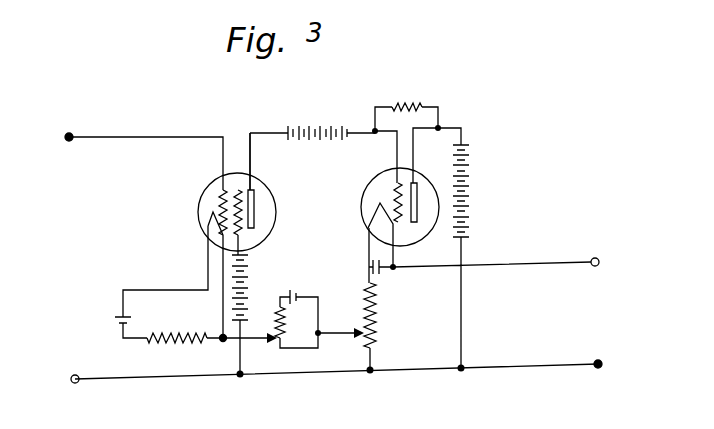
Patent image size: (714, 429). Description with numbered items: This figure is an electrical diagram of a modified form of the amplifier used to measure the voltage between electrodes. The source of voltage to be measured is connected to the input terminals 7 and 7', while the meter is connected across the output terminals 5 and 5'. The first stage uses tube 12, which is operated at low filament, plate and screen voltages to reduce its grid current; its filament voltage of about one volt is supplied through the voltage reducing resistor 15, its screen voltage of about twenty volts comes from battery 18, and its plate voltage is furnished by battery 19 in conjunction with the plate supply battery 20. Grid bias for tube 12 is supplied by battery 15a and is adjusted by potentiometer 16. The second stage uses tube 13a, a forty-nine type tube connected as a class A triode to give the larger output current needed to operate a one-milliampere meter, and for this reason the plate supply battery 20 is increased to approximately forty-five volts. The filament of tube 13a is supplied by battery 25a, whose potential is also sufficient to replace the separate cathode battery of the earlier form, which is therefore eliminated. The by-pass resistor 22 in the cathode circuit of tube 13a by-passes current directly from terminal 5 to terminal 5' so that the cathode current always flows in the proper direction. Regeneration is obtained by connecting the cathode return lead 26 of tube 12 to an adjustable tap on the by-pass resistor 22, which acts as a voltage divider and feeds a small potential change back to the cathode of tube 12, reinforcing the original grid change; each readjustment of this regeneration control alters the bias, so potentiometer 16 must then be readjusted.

The input terminal 7 is at (61, 127).
The input terminal 7' is at (64, 367).
The output terminal 5 is at (610, 253).
The output terminal 5' is at (614, 357).
The tube 12 is at (276, 214).
The tube 13a is at (363, 206).
The voltage reducing resistor 15 is at (180, 331).
The battery 15a is at (303, 295).
The potentiometer 16 is at (277, 312).
The battery 18 is at (251, 265).
The battery 19 is at (305, 125).
The plate supply battery 20 is at (469, 182).
The by-pass resistor 22 is at (378, 324).
The battery 25a is at (396, 271).
The cathode return lead 26 is at (226, 343).